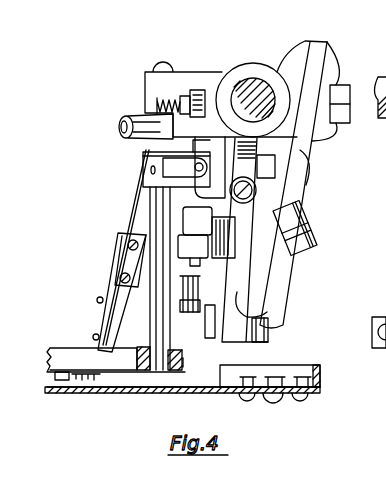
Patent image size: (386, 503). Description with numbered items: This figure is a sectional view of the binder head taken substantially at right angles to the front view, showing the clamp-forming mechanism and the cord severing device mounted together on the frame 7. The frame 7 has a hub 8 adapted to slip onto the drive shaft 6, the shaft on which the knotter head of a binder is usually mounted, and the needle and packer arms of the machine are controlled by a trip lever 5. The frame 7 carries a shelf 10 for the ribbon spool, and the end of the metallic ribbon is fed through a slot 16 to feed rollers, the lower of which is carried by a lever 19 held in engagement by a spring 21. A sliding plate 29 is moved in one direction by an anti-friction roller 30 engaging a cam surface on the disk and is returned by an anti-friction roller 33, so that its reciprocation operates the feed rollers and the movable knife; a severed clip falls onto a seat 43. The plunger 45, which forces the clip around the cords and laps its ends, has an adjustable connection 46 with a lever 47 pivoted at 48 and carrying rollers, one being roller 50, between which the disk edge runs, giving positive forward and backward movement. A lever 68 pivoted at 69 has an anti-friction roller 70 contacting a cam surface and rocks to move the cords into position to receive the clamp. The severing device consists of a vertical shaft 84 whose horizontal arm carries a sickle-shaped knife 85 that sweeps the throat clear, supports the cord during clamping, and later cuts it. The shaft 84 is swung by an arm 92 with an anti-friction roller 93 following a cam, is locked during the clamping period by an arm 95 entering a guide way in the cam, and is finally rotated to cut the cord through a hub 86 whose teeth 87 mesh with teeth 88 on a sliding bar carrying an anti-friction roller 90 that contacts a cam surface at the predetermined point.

The trip lever 5 is at (382, 188).
The drive shaft 6 is at (240, 98).
The frame 7 is at (135, 208).
The hub 8 is at (245, 68).
The shelf 10 is at (318, 387).
The slot 16 is at (107, 298).
The lever 19 is at (183, 367).
The spring 21 is at (183, 307).
The plate 29 is at (185, 245).
The anti-friction roller 30 is at (193, 215).
The anti-friction roller 33 is at (248, 236).
The seat 43 is at (377, 208).
The plunger 45 is at (225, 348).
The adjustable connection 46 is at (268, 328).
The lever 47 is at (313, 144).
The pivot 48 is at (338, 85).
The roller 50 is at (312, 227).
The lever 68 is at (252, 166).
The pivot 69 is at (275, 160).
The anti-friction roller 70 is at (284, 196).
The vertical shaft 84 is at (157, 300).
The sickle-shaped knife 85 is at (72, 380).
The hub 86 is at (147, 97).
The teeth 87 is at (157, 106).
The teeth 88 is at (178, 102).
The anti-friction roller 90 is at (197, 90).
The arm 92 is at (145, 138).
The anti-friction roller 93 is at (128, 125).
The arm 95 is at (158, 163).